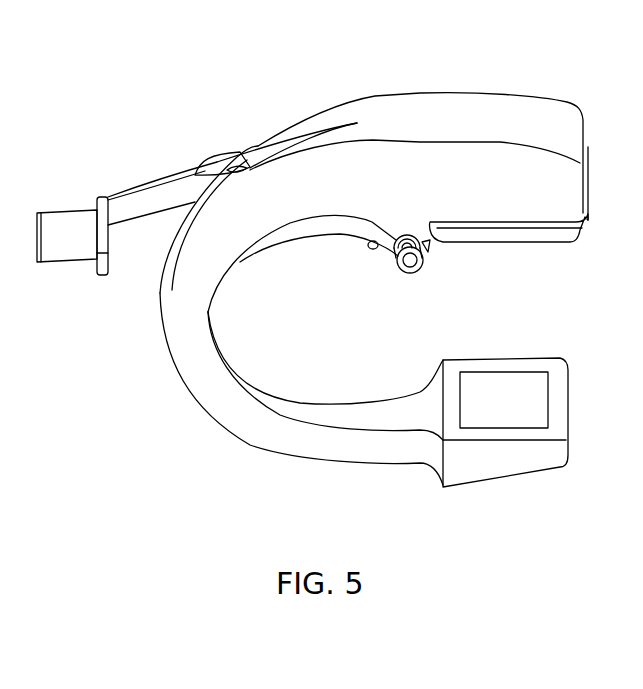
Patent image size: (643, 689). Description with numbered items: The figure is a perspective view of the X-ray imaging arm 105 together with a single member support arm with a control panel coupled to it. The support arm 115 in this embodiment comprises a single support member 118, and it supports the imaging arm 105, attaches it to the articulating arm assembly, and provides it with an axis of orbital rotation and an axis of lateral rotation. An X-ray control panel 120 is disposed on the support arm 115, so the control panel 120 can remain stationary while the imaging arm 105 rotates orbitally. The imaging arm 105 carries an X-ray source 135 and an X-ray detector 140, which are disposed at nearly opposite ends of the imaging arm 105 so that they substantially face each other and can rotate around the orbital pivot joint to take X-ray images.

The X-ray imaging arm 105 is at (527, 81).
The support arm assembly 115 is at (116, 177).
The support member 118 is at (163, 200).
The X-ray control panel 120 is at (217, 152).
The X-ray source 135 is at (547, 247).
The X-ray detector 140 is at (530, 371).